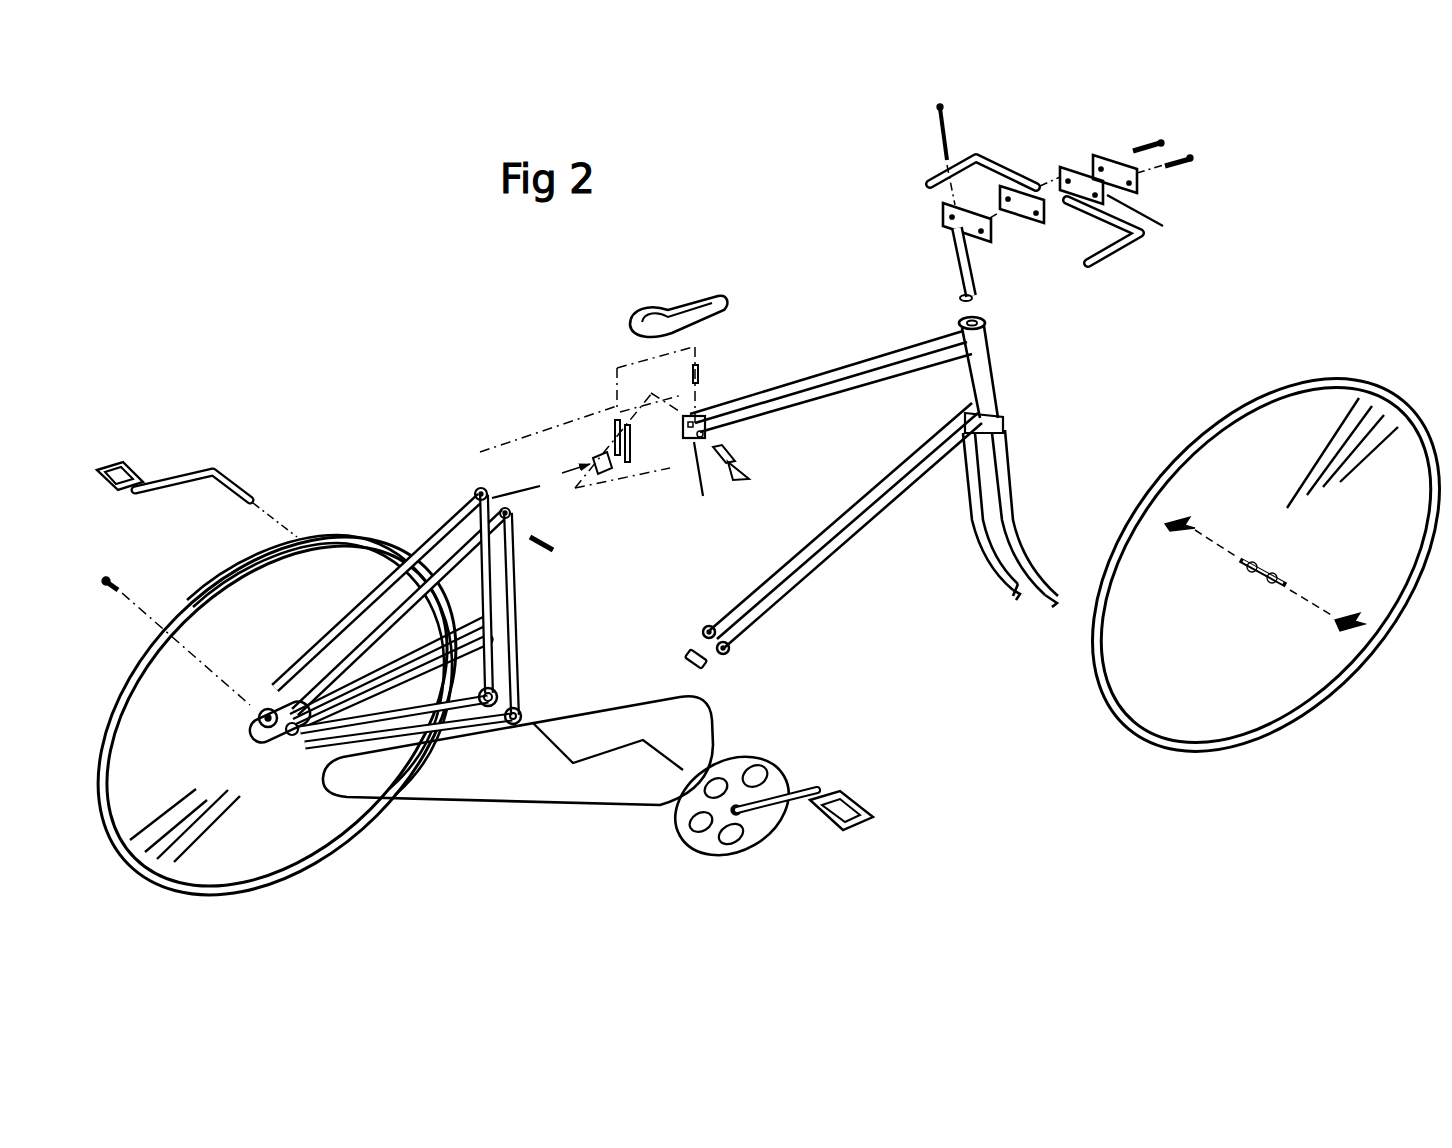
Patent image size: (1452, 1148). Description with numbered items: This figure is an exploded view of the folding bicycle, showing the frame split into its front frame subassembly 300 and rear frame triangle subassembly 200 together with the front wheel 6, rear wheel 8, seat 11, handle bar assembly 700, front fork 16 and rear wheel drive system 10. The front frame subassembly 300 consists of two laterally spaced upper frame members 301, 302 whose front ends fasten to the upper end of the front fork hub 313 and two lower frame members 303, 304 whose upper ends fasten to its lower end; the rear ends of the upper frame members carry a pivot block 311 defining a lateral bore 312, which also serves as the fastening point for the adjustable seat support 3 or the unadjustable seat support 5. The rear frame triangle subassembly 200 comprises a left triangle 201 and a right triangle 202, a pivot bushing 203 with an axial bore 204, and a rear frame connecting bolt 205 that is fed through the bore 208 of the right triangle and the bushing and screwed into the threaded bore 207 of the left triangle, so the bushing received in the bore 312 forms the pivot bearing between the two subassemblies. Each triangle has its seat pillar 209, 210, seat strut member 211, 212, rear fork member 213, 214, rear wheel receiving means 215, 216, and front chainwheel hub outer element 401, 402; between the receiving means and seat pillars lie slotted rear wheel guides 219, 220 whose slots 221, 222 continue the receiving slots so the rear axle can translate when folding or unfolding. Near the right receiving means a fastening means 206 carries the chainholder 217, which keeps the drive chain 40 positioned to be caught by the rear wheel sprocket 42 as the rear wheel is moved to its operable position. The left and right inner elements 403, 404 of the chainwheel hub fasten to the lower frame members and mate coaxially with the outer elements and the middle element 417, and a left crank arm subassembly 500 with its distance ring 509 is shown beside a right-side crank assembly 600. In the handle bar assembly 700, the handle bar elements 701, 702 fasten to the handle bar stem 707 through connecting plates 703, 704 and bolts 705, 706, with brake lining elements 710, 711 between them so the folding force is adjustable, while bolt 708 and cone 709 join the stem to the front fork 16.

The adjustable seat support 3 is at (660, 486).
The unadjustable seat support 5 is at (700, 376).
The front wheel 6 is at (1160, 452).
The rear wheel 8 is at (100, 736).
The rear wheel drive system 10 is at (520, 808).
The seat 11 is at (666, 306).
The front fork 16 is at (1010, 477).
The drive chain 40 is at (446, 808).
The rear wheel sprocket 42 is at (262, 730).
The rear frame triangle subassembly 200 is at (385, 485).
The left triangle 201 is at (438, 517).
The right triangle 202 is at (436, 565).
The pivot bushing 203 is at (750, 489).
The axial bore 204 is at (738, 461).
The rear frame connecting bolt 205 is at (567, 556).
The fastening means 206 is at (312, 739).
The threaded bore 207 is at (485, 489).
The bore 208 is at (513, 518).
The seat pillar 209 is at (488, 598).
The seat pillar 210 is at (510, 580).
The seat strut member 211 is at (353, 606).
The seat strut member 212 is at (366, 641).
The rear fork member 213 is at (397, 712).
The rear fork member 214 is at (466, 752).
The rear wheel receiving means 215 is at (260, 698).
The rear wheel receiving means 216 is at (277, 748).
The chainholder 217 is at (112, 596).
The slotted rear wheel guide 219 is at (477, 612).
The slotted rear wheel guide 220 is at (480, 641).
The slot 221 is at (487, 637).
The slot 222 is at (487, 641).
The front frame subassembly 300 is at (855, 600).
The upper frame member 301 is at (815, 380).
The upper frame member 302 is at (892, 385).
The lower frame member 303 is at (753, 582).
The lower frame member 304 is at (783, 606).
The pivot block 311 is at (705, 484).
The lateral bore 312 is at (710, 437).
The front fork hub 313 is at (994, 387).
The left outer element 401 is at (487, 722).
The right outer element 402 is at (530, 718).
The left inner element 403 is at (704, 628).
The right inner element 404 is at (729, 654).
The middle element 417 is at (702, 670).
The left crank arm subassembly 500 is at (185, 472).
The distance ring 509 is at (215, 484).
The right crank assembly 600 is at (802, 768).
The handle bar assembly 700 is at (1175, 300).
The handle bar element 701 is at (1016, 180).
The handle bar element 702 is at (1098, 270).
The connecting plate 703 is at (1093, 162).
The connecting plate 704 is at (940, 214).
The bolt 705 is at (1145, 145).
The bolt 706 is at (1182, 168).
The handle bar stem 707 is at (955, 279).
The bolt 708 is at (940, 148).
The cone 709 is at (974, 297).
The brake lining element 710 is at (1036, 226).
The brake lining element 711 is at (1153, 228).